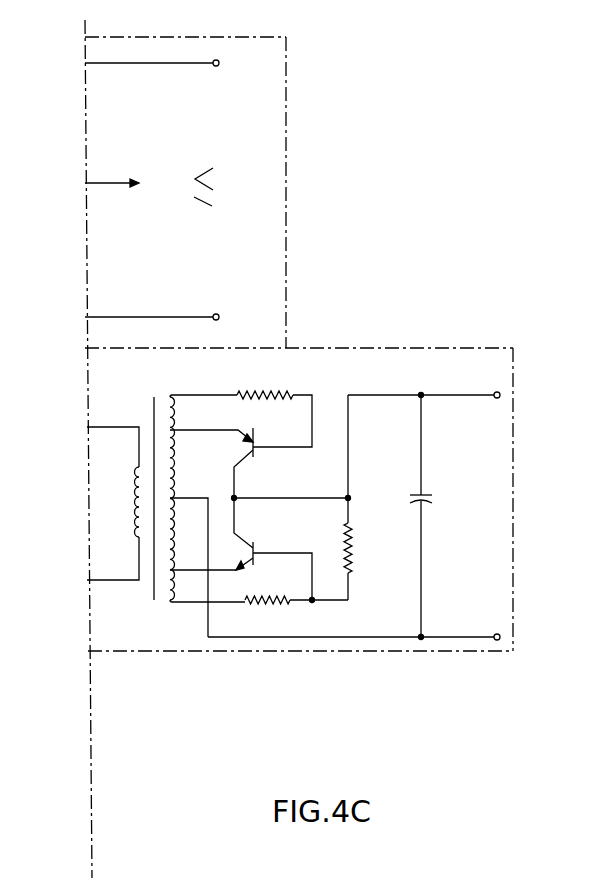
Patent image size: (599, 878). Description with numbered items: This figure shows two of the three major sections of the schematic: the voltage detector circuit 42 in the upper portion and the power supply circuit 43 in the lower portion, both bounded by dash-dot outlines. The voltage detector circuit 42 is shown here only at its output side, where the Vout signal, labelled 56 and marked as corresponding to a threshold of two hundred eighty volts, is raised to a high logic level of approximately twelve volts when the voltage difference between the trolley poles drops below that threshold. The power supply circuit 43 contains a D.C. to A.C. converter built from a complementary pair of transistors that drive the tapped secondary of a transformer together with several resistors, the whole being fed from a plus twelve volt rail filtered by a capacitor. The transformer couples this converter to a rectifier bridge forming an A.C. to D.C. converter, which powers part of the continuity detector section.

The voltage detector circuit 42 is at (208, 20).
The output voltage VOUT 56 is at (173, 158).
The power supply circuit 43 is at (285, 655).